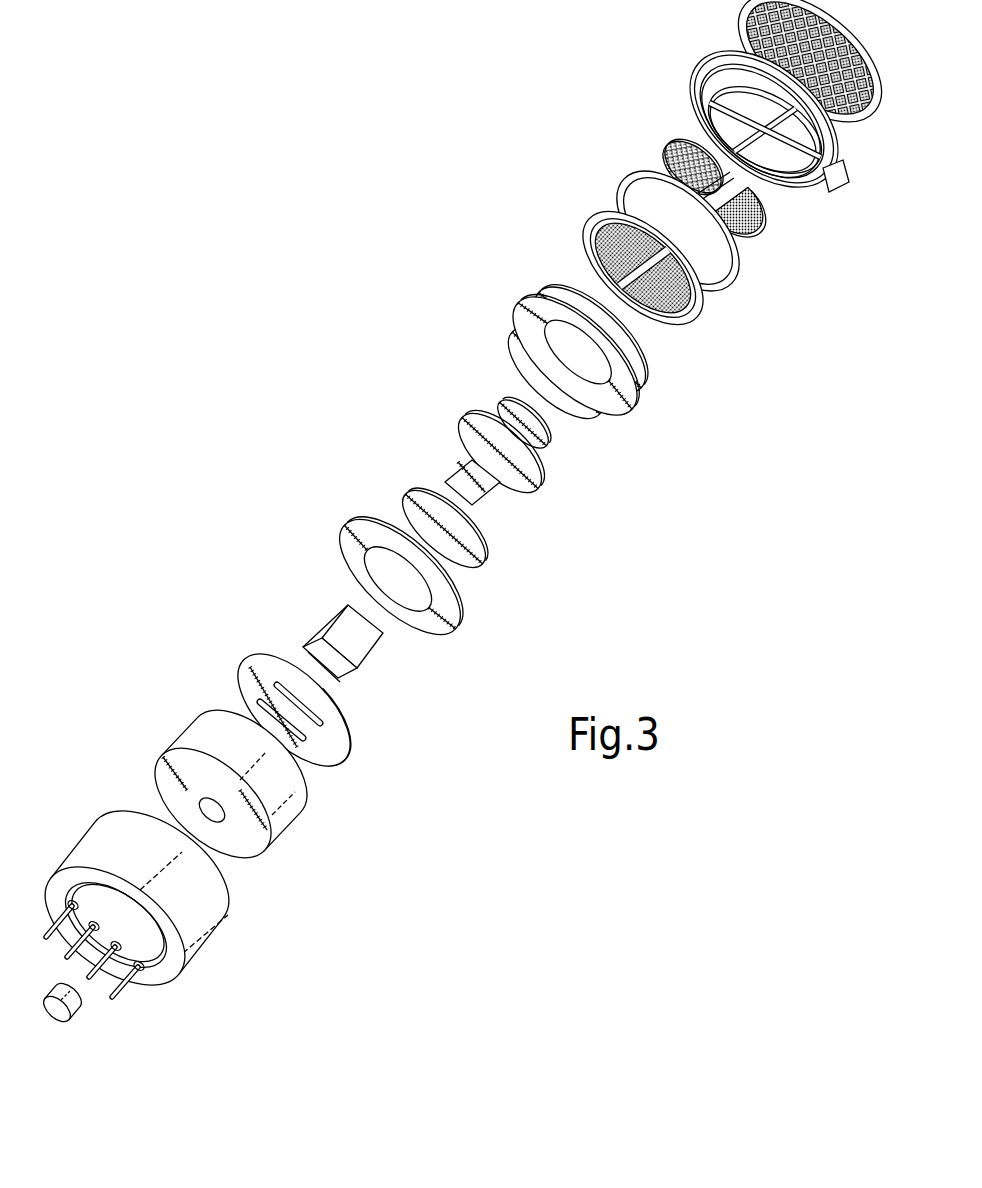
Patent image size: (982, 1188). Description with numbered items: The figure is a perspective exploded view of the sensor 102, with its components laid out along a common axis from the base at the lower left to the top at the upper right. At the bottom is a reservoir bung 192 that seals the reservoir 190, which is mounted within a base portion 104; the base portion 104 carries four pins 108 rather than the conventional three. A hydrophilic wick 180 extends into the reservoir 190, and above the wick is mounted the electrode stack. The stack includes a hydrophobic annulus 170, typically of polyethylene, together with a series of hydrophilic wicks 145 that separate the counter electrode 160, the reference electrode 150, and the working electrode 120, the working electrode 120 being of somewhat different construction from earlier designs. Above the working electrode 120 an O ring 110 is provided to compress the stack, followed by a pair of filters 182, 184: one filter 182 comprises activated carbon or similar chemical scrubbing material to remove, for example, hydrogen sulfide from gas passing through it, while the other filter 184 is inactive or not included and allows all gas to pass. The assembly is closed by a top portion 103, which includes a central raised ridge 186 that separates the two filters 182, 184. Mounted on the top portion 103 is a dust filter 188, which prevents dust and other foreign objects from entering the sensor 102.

The sensor 102 is at (378, 233).
The top portion 103 is at (708, 52).
The base portion 104 is at (192, 907).
The pins 108 is at (125, 987).
The O ring 110 is at (736, 266).
The working electrode 120 is at (593, 227).
The hydrophilic wicks 145 is at (650, 355).
The reference electrode 150 is at (547, 430).
The counter electrode 160 is at (462, 485).
The hydrophobic annulus 170 is at (527, 316).
The hydrophilic wick 180 is at (360, 642).
The filter 182 is at (748, 221).
The filter 184 is at (660, 153).
The central raised ridge 186 is at (714, 120).
The dust filter 188 is at (744, 36).
The reservoir 190 is at (278, 812).
The reservoir bung 192 is at (63, 1023).